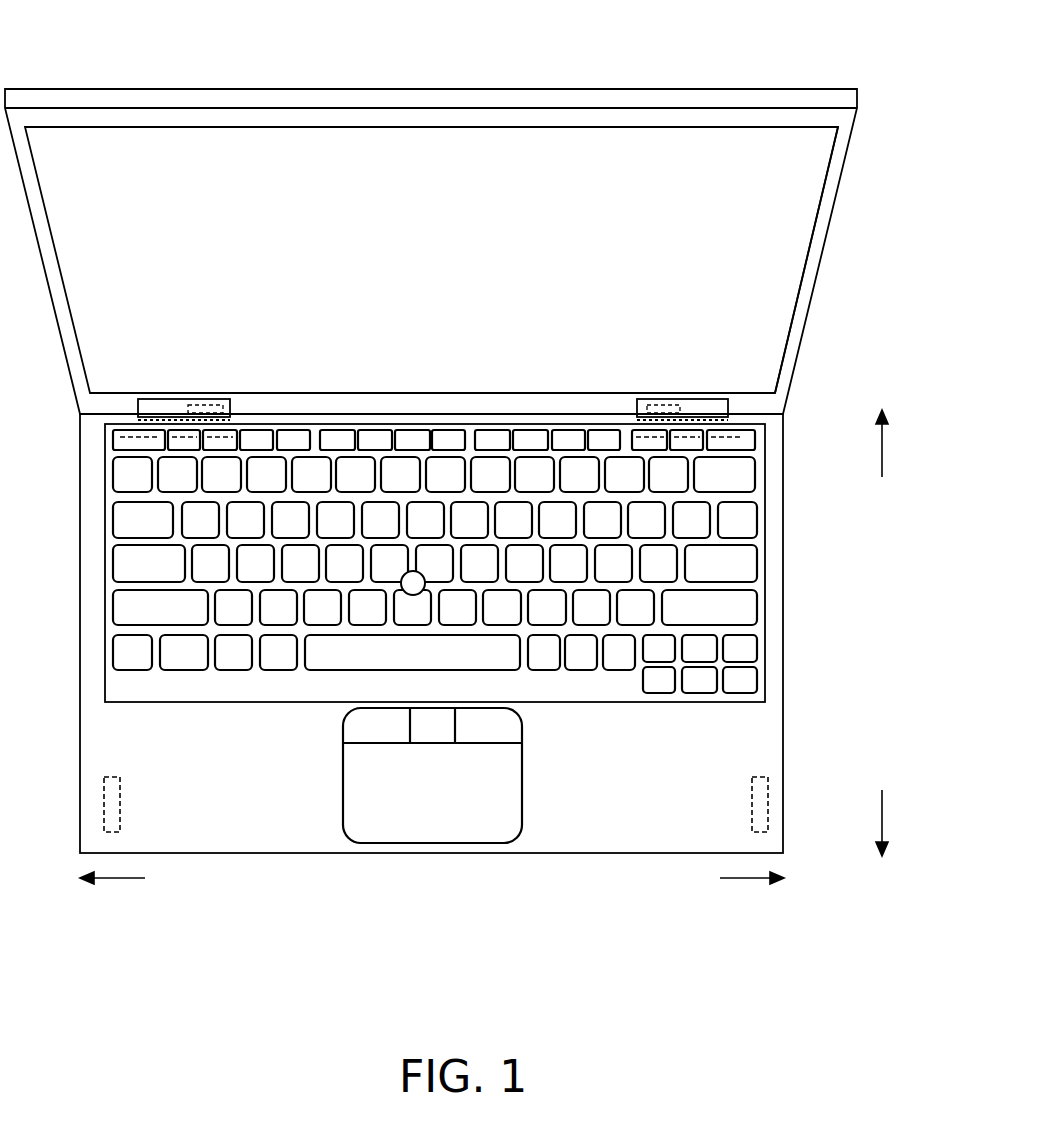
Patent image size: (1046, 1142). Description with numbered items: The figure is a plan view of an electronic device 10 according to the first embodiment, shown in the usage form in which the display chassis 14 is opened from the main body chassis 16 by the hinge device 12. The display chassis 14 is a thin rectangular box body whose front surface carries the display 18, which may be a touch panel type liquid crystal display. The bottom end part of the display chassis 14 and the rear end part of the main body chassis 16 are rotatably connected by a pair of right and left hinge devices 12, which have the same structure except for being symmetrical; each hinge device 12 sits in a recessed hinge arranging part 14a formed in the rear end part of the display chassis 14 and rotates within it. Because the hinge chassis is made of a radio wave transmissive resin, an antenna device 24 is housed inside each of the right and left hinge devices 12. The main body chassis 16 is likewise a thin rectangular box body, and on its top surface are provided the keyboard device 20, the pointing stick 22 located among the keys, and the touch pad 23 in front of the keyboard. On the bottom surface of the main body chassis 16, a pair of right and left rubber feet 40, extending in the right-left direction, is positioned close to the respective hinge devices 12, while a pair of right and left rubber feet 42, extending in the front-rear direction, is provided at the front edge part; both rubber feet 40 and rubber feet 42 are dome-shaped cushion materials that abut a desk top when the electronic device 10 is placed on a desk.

The electronic device 10 is at (47, 31).
The display chassis 14 is at (850, 178).
The display 18 is at (780, 250).
The hinge arranging part 14a is at (803, 305).
The main body chassis 16 is at (802, 597).
The hinge device 12 is at (168, 398).
The antenna device 24 is at (208, 404).
The keyboard device 20 is at (102, 540).
The pointing stick 22 is at (413, 571).
The rubber foot 40 is at (160, 441).
The touch pad 23 is at (447, 822).
The rubber foot 42 is at (103, 806).